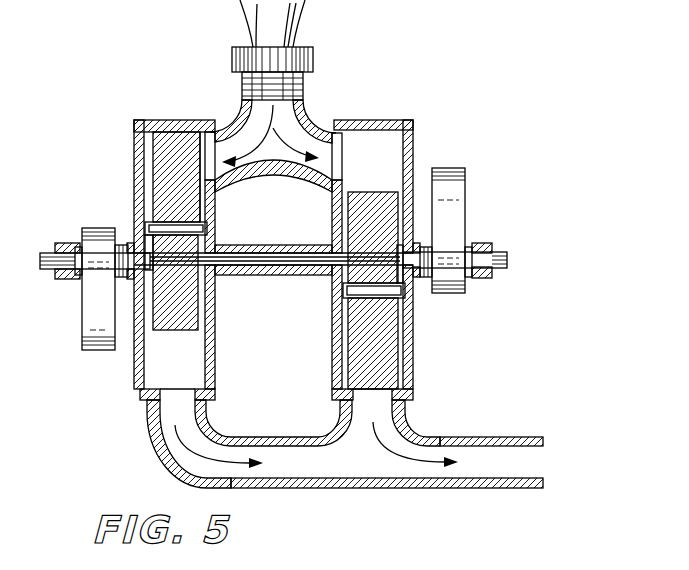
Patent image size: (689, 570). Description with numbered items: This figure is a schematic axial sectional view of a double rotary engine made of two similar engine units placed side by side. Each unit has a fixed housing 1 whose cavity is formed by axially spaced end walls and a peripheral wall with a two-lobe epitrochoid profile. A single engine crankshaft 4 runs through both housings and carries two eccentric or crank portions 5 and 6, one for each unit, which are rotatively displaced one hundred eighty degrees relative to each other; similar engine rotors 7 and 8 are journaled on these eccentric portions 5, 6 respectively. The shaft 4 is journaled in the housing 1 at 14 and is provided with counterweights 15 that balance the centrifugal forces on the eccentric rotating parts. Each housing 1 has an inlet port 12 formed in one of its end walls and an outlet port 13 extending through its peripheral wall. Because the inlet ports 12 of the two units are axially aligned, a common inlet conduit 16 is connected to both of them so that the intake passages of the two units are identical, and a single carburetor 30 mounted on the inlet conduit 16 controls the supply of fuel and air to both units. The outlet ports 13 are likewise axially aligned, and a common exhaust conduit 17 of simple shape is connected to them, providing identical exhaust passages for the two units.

The fixed housing 1 is at (175, 121).
The engine crankshaft 4 is at (272, 258).
The eccentric or crank portion 5 is at (163, 225).
The eccentric or crank portion 6 is at (383, 297).
The engine rotor 7 is at (160, 160).
The engine rotor 8 is at (378, 363).
The inlet port 12 is at (214, 152).
The outlet port 13 is at (162, 393).
The shaft journal 14 is at (73, 282).
The counterweights 15 is at (90, 327).
The common inlet conduit 16 is at (287, 107).
The common exhaust conduit 17 is at (337, 462).
The carburetor 30 is at (314, 60).